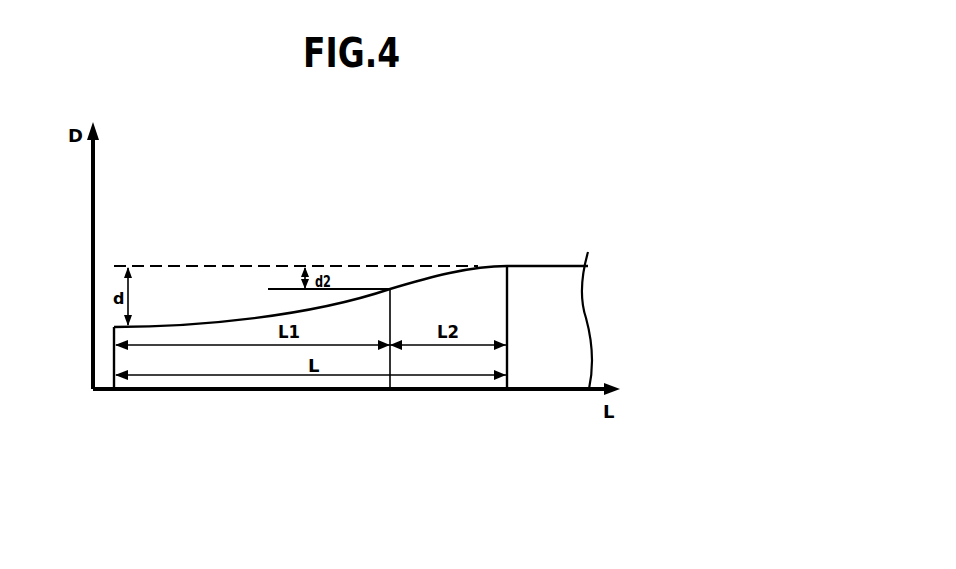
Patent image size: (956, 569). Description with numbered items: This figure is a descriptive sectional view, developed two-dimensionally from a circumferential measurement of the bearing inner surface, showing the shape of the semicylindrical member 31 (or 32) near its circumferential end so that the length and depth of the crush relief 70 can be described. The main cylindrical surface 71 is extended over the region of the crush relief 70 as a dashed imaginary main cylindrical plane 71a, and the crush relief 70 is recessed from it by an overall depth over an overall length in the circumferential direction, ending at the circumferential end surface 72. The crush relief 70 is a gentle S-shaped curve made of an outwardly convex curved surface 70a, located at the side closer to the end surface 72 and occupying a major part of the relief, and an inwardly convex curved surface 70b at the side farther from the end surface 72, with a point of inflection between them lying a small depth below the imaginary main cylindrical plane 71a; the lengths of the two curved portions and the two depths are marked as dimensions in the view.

The crush relief 70 is at (317, 299).
The outwardly convex curved surface 70a is at (203, 325).
The inwardly convex curved surface 70b is at (430, 272).
The main cylindrical surface 71 is at (563, 256).
The imaginary main cylindrical plane 71a is at (275, 267).
The circumferential end surface 72 is at (108, 362).
The rotor / body member 31 is at (570, 317).
The rotor / body member (alternate) 32 is at (635, 320).